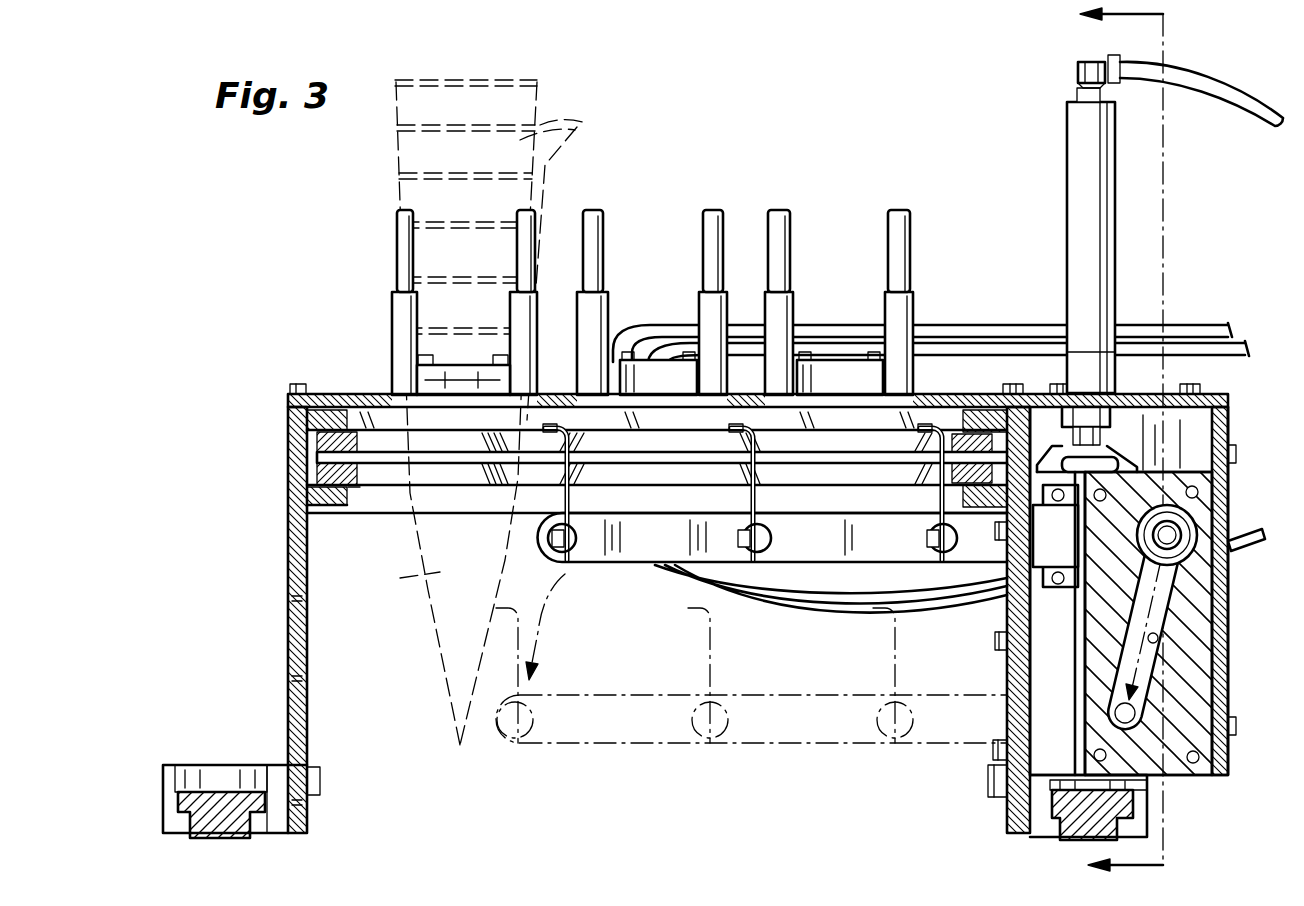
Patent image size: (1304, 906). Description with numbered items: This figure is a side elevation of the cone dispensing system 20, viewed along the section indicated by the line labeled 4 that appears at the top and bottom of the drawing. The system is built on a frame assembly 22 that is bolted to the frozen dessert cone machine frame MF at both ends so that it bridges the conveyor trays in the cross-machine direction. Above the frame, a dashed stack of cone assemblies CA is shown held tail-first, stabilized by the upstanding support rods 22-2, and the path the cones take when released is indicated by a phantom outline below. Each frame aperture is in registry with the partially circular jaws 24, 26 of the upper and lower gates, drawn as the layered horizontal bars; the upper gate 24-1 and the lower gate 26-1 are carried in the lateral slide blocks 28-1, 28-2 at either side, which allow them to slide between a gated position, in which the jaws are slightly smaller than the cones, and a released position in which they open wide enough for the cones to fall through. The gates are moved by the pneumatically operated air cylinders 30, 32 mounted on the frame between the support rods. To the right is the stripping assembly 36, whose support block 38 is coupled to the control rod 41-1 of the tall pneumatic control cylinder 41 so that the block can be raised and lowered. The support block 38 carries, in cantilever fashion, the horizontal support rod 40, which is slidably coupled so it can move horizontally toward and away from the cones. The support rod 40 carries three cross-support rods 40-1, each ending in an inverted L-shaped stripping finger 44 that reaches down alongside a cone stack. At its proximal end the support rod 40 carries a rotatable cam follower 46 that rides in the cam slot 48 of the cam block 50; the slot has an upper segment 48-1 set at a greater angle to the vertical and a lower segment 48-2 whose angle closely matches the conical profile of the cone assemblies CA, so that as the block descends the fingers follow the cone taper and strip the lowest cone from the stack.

The section line 4- 4 is at (1106, 441).
The cone dispensing system 20 is at (770, 80).
The frame assembly 22 is at (311, 393).
The support rods 22-2 is at (518, 262).
The upper gate jaws 24 is at (425, 474).
The upper gate 24-1 is at (390, 394).
The lower gate jaws 26 is at (480, 476).
The lower gate 26-1 is at (374, 514).
The lateral slide block 28-1 is at (300, 426).
The lateral slide block 28-2 is at (1005, 393).
The air cylinder 30 is at (668, 390).
The air cylinder 32 is at (845, 390).
The stripping assembly 36 is at (1202, 458).
The support block 38 is at (1071, 544).
The support rod 40 is at (833, 549).
The cross-support rods 40-1 is at (580, 536).
The pneumatic control cylinder 41 is at (1102, 254).
The control rod 41-1 is at (1103, 448).
The stripping finger 44 is at (557, 431).
The cam follower 46 is at (1193, 527).
The cam slot 48 is at (1163, 630).
The upper segment 48-1 is at (1210, 547).
The lower segment 48-2 is at (1147, 677).
The cam block 50 is at (1130, 532).
The cone assembly CA is at (481, 412).
The machine frame MF is at (229, 792).